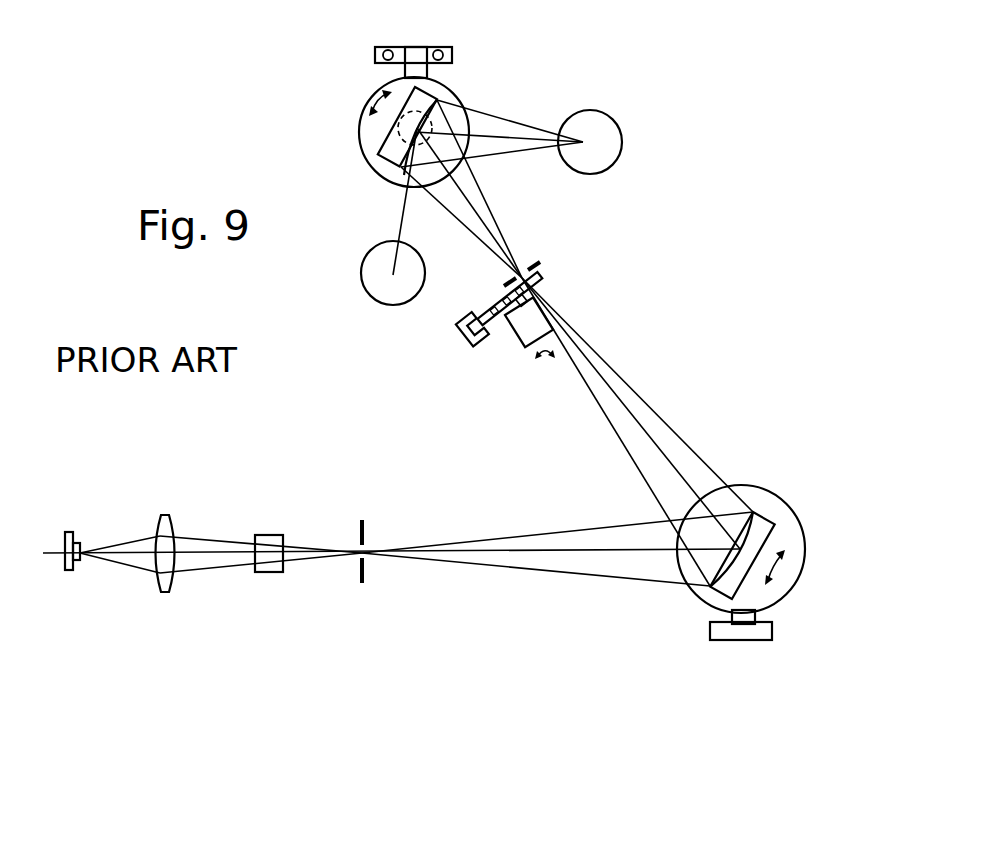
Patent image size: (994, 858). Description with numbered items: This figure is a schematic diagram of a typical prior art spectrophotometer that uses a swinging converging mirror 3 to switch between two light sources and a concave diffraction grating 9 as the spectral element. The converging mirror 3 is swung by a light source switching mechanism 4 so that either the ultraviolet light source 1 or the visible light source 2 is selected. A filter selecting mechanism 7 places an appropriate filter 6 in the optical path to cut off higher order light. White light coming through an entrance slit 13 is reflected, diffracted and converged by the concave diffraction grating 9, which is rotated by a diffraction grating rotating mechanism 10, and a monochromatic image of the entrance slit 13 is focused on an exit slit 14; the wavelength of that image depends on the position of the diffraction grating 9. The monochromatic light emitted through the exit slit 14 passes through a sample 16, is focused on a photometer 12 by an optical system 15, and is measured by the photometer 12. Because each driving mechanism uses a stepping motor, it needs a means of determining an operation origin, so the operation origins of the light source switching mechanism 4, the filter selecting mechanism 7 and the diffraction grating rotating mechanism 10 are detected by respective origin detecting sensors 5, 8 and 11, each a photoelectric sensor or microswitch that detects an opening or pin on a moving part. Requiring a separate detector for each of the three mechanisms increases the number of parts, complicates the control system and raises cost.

The ultraviolet light source 1 is at (622, 128).
The visible light source 2 is at (362, 288).
The converging mirror 3 is at (376, 137).
The light source switching mechanism 4 is at (462, 92).
The origin detecting sensor 5 is at (453, 45).
The filter 6 is at (542, 277).
The filter selecting mechanism 7 is at (522, 348).
The origin detecting sensor 8 is at (463, 345).
The concave diffraction grating 9 is at (775, 513).
The diffraction grating rotating mechanism 10 is at (805, 557).
The origin detecting sensor 11 is at (772, 632).
The photometer 12 is at (68, 570).
The entrance slit 13 is at (538, 257).
The exit slit 14 is at (362, 583).
The optical system 15 is at (165, 593).
The sample 16 is at (263, 535).